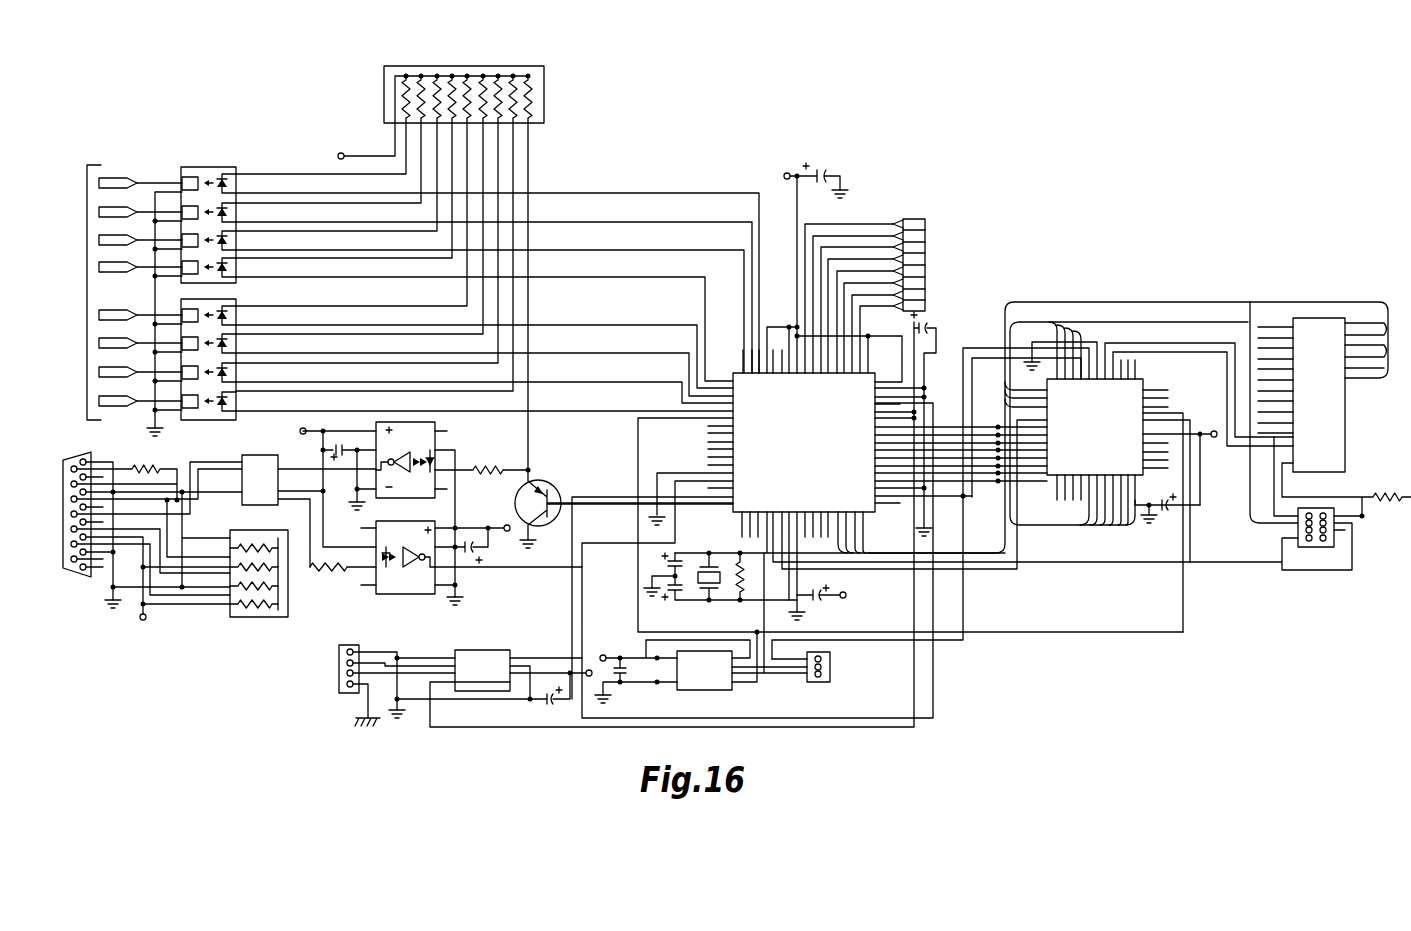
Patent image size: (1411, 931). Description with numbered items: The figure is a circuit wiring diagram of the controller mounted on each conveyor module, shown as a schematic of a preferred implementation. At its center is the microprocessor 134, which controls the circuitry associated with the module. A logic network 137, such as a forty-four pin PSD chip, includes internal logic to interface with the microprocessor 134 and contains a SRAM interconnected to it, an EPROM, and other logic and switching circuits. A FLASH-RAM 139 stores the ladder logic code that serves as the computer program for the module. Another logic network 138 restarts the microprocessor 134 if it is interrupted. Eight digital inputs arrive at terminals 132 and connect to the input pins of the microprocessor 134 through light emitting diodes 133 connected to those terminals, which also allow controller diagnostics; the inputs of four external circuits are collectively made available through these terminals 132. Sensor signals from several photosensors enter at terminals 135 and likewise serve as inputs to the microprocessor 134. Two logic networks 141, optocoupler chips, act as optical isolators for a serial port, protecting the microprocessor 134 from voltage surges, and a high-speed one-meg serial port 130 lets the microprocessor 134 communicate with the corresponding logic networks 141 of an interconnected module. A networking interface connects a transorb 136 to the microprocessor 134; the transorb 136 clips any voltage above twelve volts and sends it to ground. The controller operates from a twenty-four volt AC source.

The high-speed one-meg serial port 130 is at (328, 673).
The terminals 132 is at (86, 188).
The light emitting diodes 133 is at (229, 146).
The microprocessor 134 is at (868, 447).
The terminals 135 is at (940, 261).
The transorb 136 is at (83, 603).
The logic network 137 is at (1158, 477).
The logic network 138 is at (701, 628).
The FLASH-RAM 139 is at (1318, 412).
The logic networks 141 is at (448, 441).